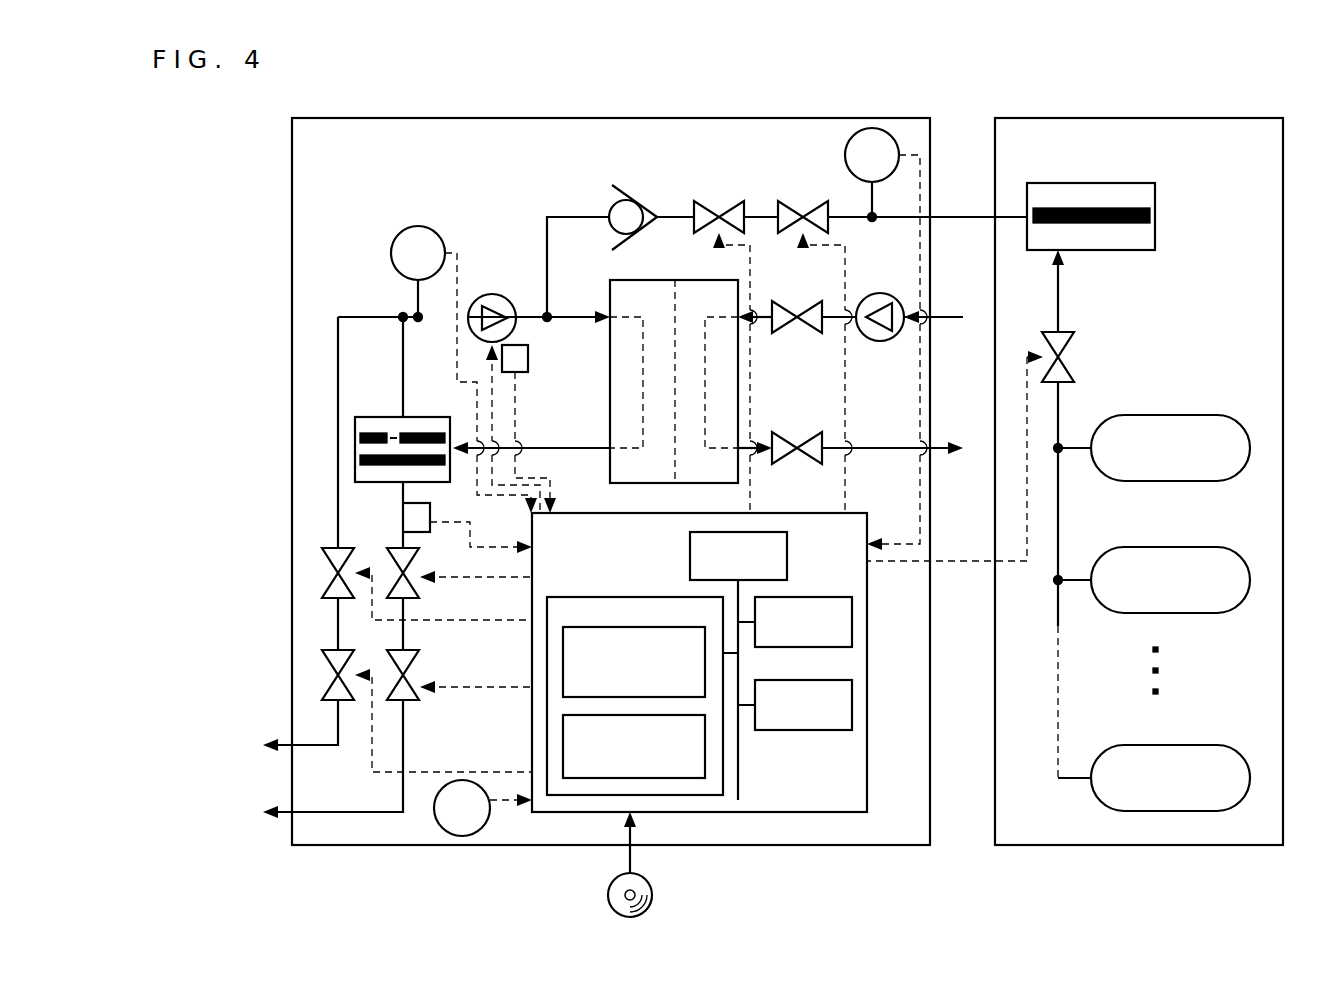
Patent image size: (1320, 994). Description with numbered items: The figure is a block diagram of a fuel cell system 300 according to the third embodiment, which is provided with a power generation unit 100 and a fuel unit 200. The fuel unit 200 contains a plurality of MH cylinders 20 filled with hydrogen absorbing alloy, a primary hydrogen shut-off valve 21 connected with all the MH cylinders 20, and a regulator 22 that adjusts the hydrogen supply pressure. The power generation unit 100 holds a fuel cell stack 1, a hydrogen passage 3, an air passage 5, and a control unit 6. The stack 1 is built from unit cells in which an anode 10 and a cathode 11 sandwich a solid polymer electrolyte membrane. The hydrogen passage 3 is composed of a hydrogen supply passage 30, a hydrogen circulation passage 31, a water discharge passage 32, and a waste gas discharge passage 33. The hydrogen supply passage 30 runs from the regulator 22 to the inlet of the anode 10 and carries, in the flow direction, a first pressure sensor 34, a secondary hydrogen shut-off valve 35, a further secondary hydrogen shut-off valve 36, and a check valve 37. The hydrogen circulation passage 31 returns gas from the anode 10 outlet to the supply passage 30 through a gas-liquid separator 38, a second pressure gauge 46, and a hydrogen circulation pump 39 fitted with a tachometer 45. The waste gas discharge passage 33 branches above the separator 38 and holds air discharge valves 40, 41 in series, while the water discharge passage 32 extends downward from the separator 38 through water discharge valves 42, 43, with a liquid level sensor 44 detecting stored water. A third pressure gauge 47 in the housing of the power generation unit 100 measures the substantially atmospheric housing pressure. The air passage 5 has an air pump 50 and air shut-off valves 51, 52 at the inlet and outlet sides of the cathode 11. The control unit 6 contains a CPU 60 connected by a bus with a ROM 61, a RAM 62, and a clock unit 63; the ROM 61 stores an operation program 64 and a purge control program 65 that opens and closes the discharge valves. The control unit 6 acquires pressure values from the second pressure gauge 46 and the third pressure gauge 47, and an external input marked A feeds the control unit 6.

The fuel cell system 300 is at (1033, 80).
The power generation unit 100 is at (588, 108).
The fuel unit 200 is at (1142, 108).
The fuel cell stack 1 is at (675, 360).
The hydrogen passage 3 is at (560, 217).
The air passage 5 is at (875, 448).
The control unit 6 is at (699, 651).
The anode 10 is at (628, 305).
The cathode 11 is at (724, 302).
The MH cylinder 20 is at (1200, 420).
The primary hydrogen shut-off valve 21 is at (1068, 375).
The regulator 22 is at (1145, 195).
The hydrogen supply passage 30 is at (547, 255).
The hydrogen circulation passage 31 is at (545, 448).
The water discharge passage 32 is at (403, 728).
The waste gas discharge passage 33 is at (338, 418).
The first pressure sensor 34 is at (872, 128).
The secondary hydrogen shut-off valve 35 is at (800, 205).
The secondary hydrogen shut-off valve 36 is at (722, 205).
The check valve 37 is at (622, 200).
The gas-liquid separator 38 is at (377, 430).
The hydrogen circulation pump 39 is at (492, 293).
The air discharge valve 40 is at (332, 568).
The air discharge valve 41 is at (332, 668).
The water discharge valve 42 is at (415, 568).
The water discharge valve 43 is at (415, 668).
The liquid level sensor 44 is at (405, 520).
The tachometer 45 is at (518, 352).
The second pressure gauge 46 is at (405, 240).
The third pressure gauge 47 is at (455, 835).
The air pump 50 is at (895, 280).
The air shut-off valve 51 is at (805, 308).
The air shut-off valve 52 is at (805, 437).
The CPU 60 is at (782, 563).
The ROM 61 is at (605, 666).
The RAM 62 is at (852, 622).
The clock unit 63 is at (852, 712).
The operation program 64 is at (563, 660).
The purge control program 65 is at (563, 745).
The external sensor A is at (653, 890).